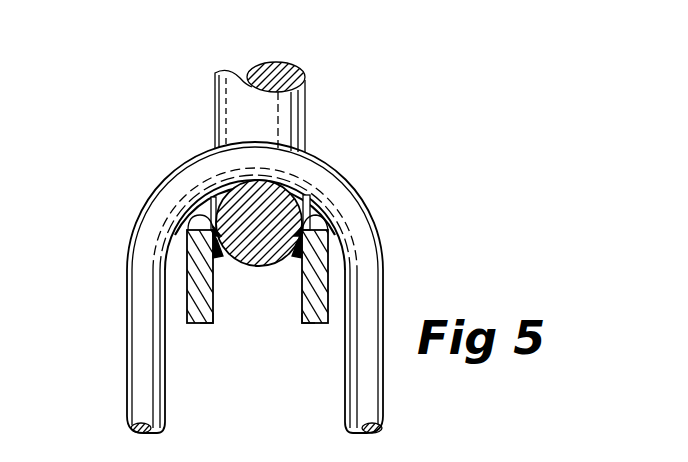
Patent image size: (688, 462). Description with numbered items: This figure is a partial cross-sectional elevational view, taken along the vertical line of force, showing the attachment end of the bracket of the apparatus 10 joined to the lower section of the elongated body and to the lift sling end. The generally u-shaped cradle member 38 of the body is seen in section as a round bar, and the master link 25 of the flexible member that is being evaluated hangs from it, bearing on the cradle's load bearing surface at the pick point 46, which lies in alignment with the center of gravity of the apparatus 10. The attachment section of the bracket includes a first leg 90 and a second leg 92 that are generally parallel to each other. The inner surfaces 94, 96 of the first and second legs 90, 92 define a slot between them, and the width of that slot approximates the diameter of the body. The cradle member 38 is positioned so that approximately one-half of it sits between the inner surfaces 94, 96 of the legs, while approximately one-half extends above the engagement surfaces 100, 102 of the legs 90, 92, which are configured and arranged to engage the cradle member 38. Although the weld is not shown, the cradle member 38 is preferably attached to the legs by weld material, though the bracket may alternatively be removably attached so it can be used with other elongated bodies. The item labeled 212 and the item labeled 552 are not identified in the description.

The apparatus 10 is at (155, 122).
The rod 212 is at (322, 84).
The pick point 46 is at (218, 289).
The master link 25 is at (141, 339).
The engagement surface 100 is at (328, 228).
The cradle member 38 is at (252, 268).
The second leg 92 is at (200, 324).
The engagement surface 102 is at (197, 222).
The inner surface 94 is at (213, 313).
The first leg 90 is at (320, 324).
The retainer 552 is at (348, 241).
The inner surface 96 is at (302, 313).